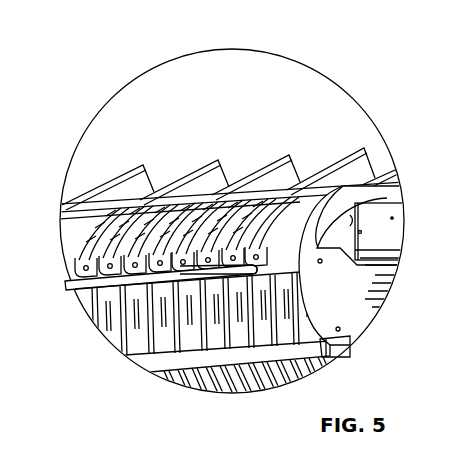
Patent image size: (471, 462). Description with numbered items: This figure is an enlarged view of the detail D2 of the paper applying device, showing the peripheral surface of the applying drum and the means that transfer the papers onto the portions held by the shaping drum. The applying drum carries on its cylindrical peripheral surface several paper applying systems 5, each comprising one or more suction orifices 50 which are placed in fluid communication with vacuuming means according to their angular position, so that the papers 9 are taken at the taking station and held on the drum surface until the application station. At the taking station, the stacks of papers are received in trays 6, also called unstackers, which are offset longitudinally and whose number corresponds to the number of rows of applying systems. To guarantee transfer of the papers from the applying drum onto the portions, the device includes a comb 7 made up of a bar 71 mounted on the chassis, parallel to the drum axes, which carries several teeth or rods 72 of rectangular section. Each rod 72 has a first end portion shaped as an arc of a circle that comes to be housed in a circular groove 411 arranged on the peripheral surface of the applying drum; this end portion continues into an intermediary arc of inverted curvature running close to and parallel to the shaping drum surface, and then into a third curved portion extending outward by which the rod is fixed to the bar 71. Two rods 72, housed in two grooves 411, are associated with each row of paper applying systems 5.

The detail D2 is at (226, 49).
The paper 9 is at (133, 205).
The rod 72 is at (204, 252).
The circular groove 411 is at (231, 267).
The tray 6 is at (362, 150).
The comb 7 is at (70, 286).
The bar 71 is at (93, 283).
The suction orifice 50 is at (258, 258).
The paper applying system 5 is at (346, 347).